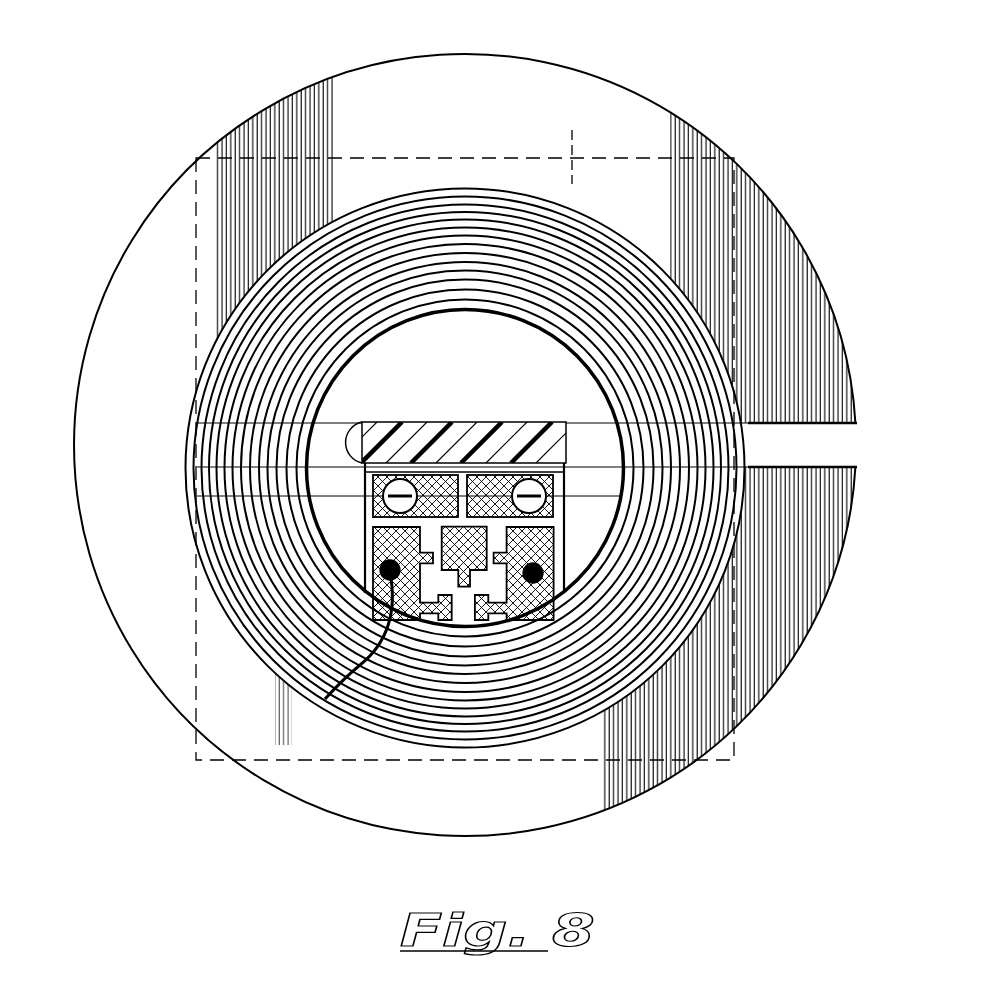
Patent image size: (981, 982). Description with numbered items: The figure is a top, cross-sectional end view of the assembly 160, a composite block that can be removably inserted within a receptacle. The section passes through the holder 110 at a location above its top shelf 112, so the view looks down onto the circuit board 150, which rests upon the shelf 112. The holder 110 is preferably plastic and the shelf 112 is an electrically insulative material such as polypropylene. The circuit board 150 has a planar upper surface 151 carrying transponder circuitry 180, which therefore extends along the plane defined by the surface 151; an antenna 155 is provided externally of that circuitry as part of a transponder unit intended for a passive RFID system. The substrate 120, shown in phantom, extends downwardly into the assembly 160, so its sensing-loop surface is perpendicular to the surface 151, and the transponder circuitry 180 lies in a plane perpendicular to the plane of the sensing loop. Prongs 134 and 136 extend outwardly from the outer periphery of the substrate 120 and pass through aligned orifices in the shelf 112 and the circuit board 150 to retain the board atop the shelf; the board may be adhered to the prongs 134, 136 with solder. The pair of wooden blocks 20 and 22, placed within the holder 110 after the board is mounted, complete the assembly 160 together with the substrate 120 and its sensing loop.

The assembly 160 is at (819, 109).
The top shelf 112 is at (153, 287).
The wooden block 20 is at (226, 643).
The wooden block 22 is at (577, 139).
The antenna 155 is at (209, 457).
The substrate 120 is at (599, 468).
The holder 110 is at (407, 427).
The prong 136 is at (553, 482).
The prong 134 is at (392, 470).
The circuit board 150 is at (467, 622).
The planar upper surface 151 is at (495, 623).
The circuitry 180 is at (368, 582).